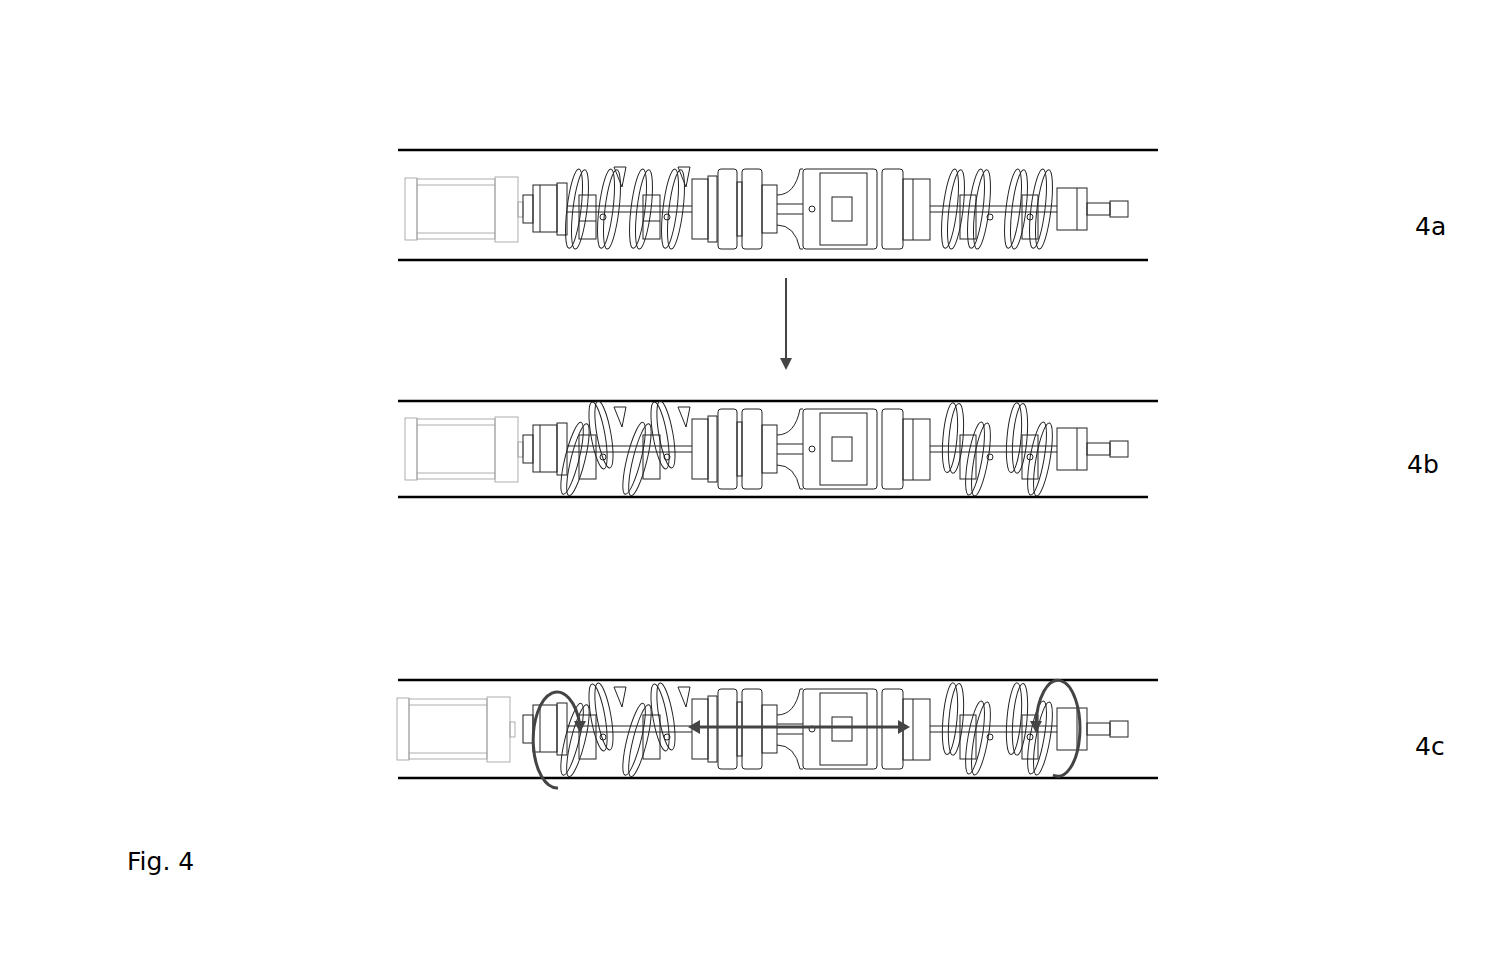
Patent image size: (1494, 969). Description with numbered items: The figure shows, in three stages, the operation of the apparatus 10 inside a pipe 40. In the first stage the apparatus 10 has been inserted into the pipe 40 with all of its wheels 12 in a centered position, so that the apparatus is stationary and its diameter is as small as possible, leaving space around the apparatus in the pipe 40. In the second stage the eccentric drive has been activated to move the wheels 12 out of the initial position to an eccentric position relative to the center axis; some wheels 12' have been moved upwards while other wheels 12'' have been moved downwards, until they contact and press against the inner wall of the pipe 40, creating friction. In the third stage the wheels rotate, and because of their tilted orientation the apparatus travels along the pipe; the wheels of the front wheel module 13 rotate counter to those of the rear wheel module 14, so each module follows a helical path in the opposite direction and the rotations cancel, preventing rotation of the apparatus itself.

The apparatus 10 is at (638, 170).
The wheels 12 is at (809, 160).
The wheels moved upwards 12' is at (812, 393).
The wheels moved downwards 12'' is at (794, 499).
The front wheel module 13 is at (930, 782).
The rear wheel module 14 is at (658, 783).
The pipe 40 is at (1117, 143).